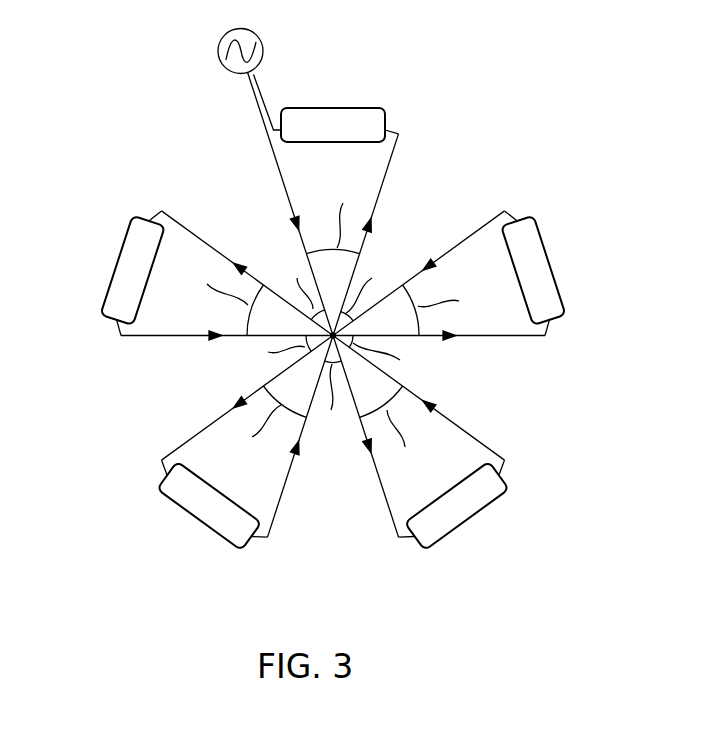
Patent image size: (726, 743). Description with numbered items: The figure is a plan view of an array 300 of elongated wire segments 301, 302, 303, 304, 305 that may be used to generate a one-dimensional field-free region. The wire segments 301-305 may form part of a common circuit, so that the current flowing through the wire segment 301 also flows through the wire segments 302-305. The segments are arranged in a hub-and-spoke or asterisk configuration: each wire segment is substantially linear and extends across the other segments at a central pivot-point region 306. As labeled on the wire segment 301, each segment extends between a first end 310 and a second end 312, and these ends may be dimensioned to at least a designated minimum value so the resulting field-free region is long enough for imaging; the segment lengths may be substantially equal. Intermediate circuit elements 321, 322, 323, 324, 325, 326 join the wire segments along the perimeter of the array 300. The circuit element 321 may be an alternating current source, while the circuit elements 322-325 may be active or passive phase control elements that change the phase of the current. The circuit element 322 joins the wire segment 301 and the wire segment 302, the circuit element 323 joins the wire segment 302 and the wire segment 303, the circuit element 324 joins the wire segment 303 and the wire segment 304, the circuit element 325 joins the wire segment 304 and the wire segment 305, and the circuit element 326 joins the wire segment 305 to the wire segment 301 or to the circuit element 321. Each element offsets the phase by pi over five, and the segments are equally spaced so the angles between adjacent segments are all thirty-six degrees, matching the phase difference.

The array 300 is at (510, 104).
The wire segment 301 is at (272, 185).
The wire segment 302 is at (459, 424).
The wire segment 303 is at (175, 338).
The wire segment 304 is at (478, 226).
The wire segment 305 is at (285, 492).
The pivot-point region 306 is at (345, 330).
The first end 310 is at (243, 126).
The second end 312 is at (390, 546).
The circuit element 321 is at (263, 38).
The circuit element 322 is at (467, 520).
The circuit element 323 is at (114, 265).
The circuit element 324 is at (553, 262).
The circuit element 325 is at (196, 520).
The circuit element 326 is at (365, 104).